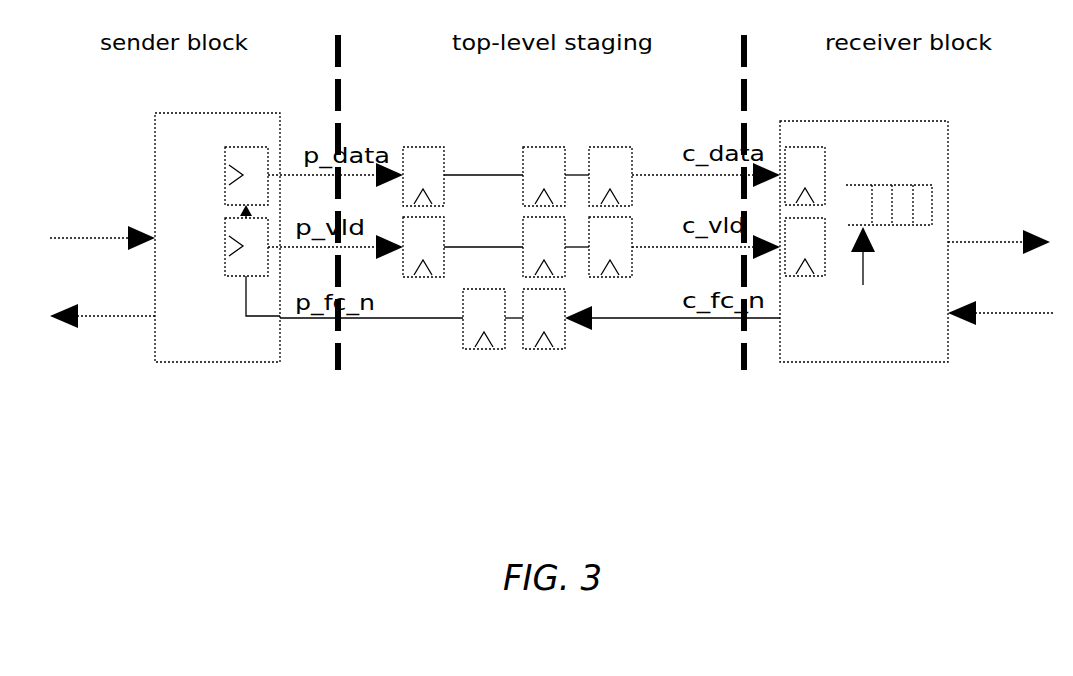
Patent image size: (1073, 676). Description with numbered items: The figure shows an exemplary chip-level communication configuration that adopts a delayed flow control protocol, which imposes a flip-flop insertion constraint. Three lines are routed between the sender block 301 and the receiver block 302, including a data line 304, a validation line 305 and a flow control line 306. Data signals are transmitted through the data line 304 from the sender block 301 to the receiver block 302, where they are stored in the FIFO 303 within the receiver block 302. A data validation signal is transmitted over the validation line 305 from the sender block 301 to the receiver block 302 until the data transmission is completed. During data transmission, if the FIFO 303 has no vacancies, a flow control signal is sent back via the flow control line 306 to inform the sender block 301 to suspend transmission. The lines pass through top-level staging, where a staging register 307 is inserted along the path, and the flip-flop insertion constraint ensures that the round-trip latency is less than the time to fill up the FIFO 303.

The sender block 301 is at (166, 185).
The receiver block 302 is at (907, 155).
The FIFO 303 is at (935, 215).
The data line 304 is at (466, 185).
The validation line 305 is at (452, 245).
The flow control line 306 is at (430, 320).
The staging register 307 is at (415, 147).